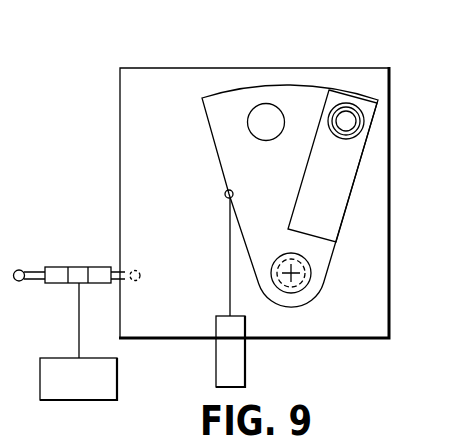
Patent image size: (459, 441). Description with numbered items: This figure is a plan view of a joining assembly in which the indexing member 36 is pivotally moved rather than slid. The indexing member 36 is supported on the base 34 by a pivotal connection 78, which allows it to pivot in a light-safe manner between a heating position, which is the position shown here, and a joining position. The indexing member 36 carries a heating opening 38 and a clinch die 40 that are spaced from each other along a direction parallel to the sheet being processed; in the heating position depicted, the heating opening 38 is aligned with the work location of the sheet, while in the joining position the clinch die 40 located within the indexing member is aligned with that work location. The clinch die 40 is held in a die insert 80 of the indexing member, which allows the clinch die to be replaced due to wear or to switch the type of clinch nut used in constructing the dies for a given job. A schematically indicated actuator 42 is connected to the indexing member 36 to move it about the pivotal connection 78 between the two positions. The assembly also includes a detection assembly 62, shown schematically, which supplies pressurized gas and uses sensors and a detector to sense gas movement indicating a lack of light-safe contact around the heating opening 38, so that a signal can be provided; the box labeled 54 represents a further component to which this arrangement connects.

The base 34 is at (263, 68).
The indexing member 36 is at (204, 144).
The heating opening 38 is at (255, 108).
The clinch die 40 is at (359, 108).
The die insert 80 is at (333, 165).
The pivotal connection 78 is at (303, 292).
The actuator 42 is at (216, 360).
The detection assembly 62 is at (75, 255).
The controller 54 is at (91, 391).